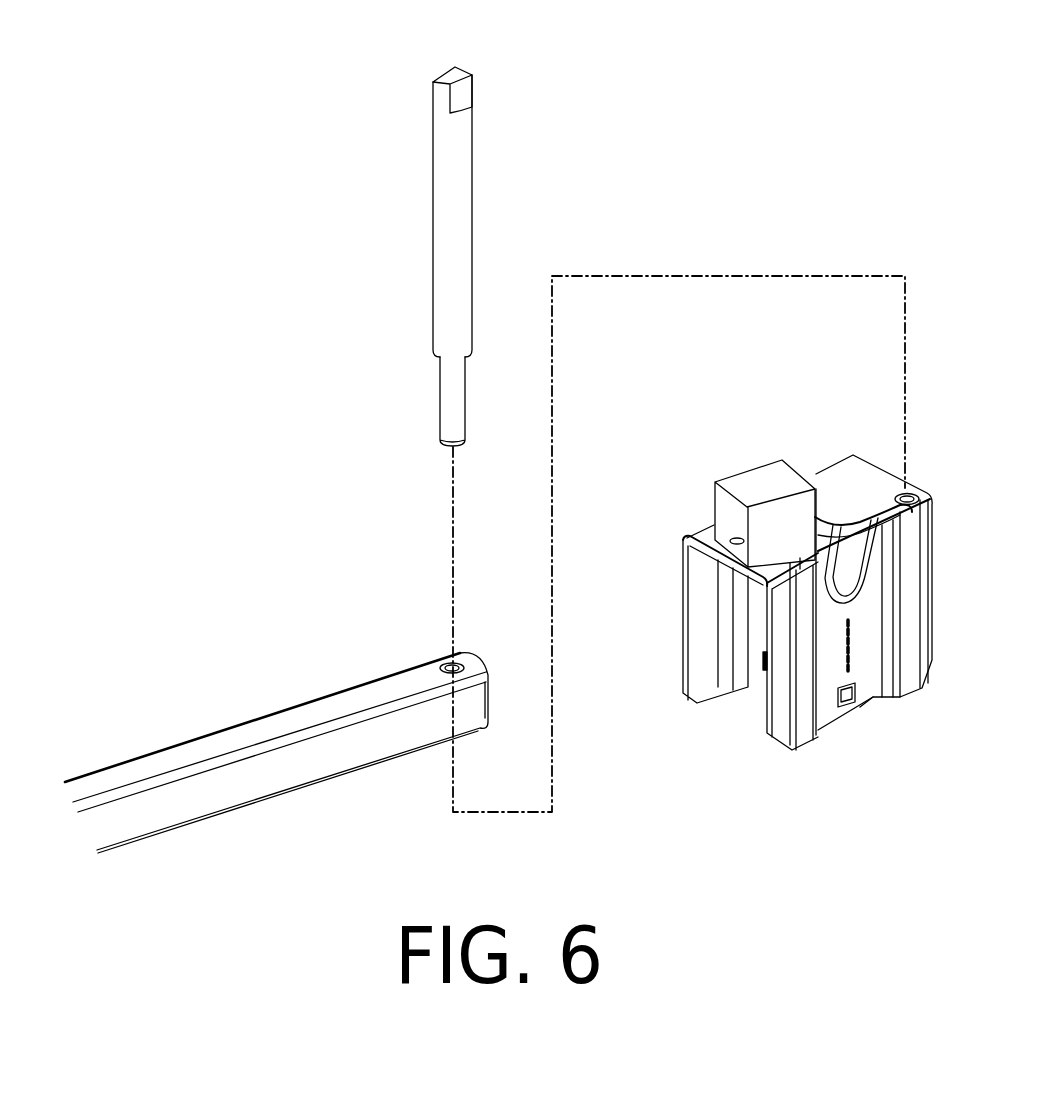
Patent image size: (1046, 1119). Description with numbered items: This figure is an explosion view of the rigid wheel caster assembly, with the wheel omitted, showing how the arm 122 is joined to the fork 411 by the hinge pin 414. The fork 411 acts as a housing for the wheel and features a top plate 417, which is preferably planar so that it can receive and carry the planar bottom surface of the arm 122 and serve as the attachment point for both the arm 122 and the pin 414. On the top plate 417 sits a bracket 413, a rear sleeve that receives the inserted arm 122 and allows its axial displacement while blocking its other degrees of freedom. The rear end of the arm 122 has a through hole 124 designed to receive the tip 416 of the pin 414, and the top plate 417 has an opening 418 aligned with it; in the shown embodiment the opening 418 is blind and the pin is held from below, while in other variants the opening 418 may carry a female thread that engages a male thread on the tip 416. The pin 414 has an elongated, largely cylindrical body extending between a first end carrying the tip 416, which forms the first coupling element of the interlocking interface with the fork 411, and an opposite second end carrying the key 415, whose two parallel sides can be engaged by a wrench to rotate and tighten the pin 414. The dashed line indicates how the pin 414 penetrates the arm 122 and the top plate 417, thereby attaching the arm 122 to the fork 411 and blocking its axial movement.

The arm 122 is at (188, 755).
The through hole 124 is at (451, 666).
The fork 411 is at (780, 725).
The bracket 413 is at (737, 492).
The hinge pin 414 is at (448, 237).
The key 415 is at (462, 95).
The tip 416 is at (448, 405).
The top plate 417 is at (833, 488).
The opening 418 is at (903, 495).